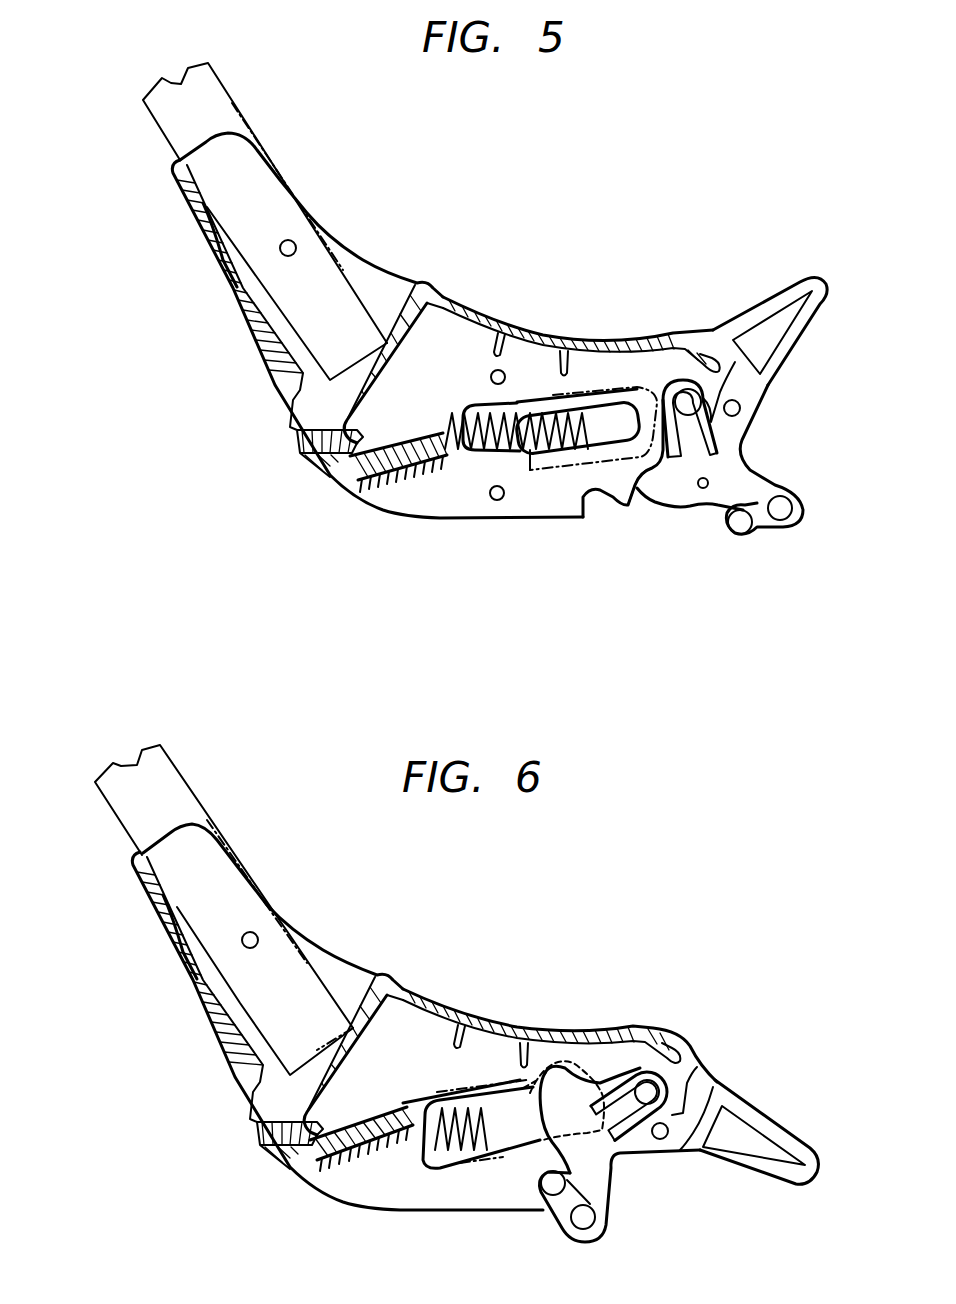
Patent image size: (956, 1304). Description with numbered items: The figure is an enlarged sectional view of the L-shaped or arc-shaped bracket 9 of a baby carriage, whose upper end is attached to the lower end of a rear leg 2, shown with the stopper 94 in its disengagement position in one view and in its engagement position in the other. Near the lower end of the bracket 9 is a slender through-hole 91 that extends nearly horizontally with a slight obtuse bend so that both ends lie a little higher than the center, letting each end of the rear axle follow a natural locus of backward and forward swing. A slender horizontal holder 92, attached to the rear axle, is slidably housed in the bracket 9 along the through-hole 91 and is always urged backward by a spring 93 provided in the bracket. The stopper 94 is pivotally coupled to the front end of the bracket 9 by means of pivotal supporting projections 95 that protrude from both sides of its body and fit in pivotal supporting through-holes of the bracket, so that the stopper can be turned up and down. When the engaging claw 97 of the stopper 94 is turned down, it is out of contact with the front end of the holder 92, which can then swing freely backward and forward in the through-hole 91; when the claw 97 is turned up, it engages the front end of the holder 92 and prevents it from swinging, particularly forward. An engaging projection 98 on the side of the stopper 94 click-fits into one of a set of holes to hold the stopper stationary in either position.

In FIG. 5, the rear leg 2 is at (203, 130).
In FIG. 6, the rear leg 2 is at (175, 803).
In FIG. 5, the bracket 9 is at (370, 272).
In FIG. 6, the bracket 9 is at (217, 1033).
In FIG. 5, the through-hole 91 is at (603, 407).
In FIG. 6, the through-hole 91 is at (503, 1123).
In FIG. 5, the holder 92 is at (543, 397).
In FIG. 6, the holder 92 is at (483, 1087).
In FIG. 5, the spring 93 is at (442, 466).
In FIG. 6, the spring 93 is at (403, 1117).
In FIG. 5, the stopper 94 is at (767, 327).
In FIG. 6, the stopper 94 is at (775, 1133).
In FIG. 5, the pivotal supporting projection 95 is at (689, 388).
In FIG. 6, the pivotal supporting projection 95 is at (655, 1085).
In FIG. 5, the engaging claw 97 is at (640, 487).
In FIG. 6, the engaging claw 97 is at (553, 1068).
In FIG. 5, the engaging projection 98 is at (740, 408).
In FIG. 6, the engaging projection 98 is at (663, 1140).